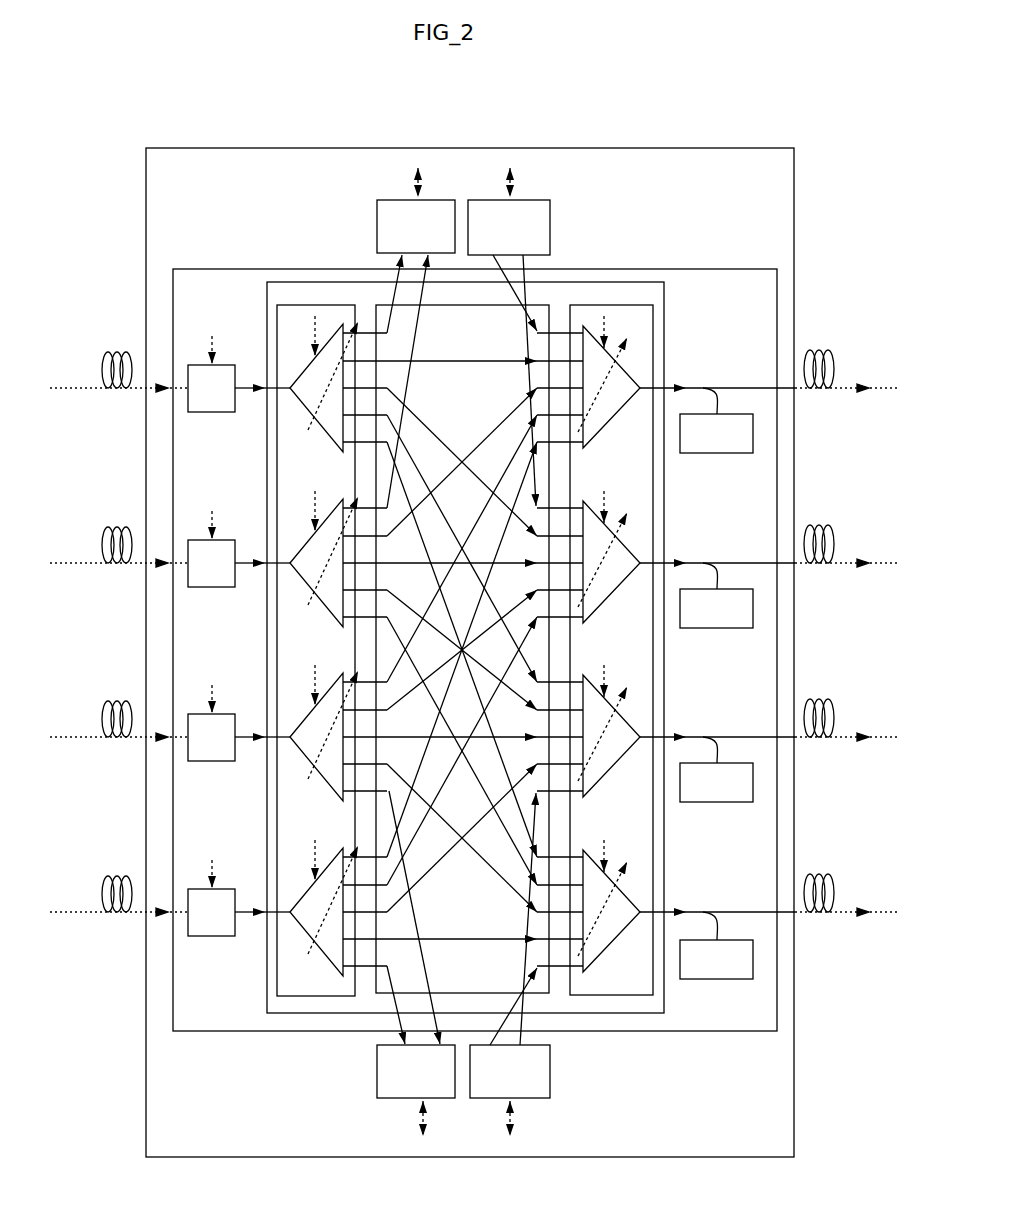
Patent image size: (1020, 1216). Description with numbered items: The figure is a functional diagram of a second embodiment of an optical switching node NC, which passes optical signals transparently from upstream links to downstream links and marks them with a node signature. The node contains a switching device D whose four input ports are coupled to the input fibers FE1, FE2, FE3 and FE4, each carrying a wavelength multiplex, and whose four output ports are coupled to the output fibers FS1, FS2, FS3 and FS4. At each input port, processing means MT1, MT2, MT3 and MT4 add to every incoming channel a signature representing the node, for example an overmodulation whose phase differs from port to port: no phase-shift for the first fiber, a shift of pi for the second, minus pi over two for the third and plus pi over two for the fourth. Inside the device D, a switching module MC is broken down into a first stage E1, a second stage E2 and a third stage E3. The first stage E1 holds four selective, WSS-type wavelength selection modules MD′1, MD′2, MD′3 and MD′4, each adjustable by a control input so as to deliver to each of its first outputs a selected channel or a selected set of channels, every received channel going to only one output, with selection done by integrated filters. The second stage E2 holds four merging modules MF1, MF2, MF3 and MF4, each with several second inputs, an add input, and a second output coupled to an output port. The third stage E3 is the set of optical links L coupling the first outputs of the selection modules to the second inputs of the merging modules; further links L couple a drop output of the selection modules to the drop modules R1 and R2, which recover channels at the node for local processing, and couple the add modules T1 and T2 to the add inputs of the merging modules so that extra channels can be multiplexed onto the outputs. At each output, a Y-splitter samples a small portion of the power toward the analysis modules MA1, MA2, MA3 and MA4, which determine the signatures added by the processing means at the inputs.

The switching node NC is at (281, 148).
The switching device D is at (745, 268).
The switching module MC is at (628, 282).
The optical links L is at (386, 331).
The first stage E1 is at (322, 997).
The second stage E2 is at (597, 996).
The third stage E3 is at (377, 994).
The drop module R1 is at (437, 199).
The add module T1 is at (532, 199).
The drop module R2 is at (443, 1099).
The add module T2 is at (533, 1100).
The first input fiber FE1 is at (82, 386).
The second input fiber FE2 is at (82, 561).
The third input fiber FE3 is at (82, 735).
The fourth input fiber FE4 is at (82, 910).
The processing means MT1 is at (203, 413).
The processing means MT2 is at (203, 588).
The processing means MT3 is at (203, 762).
The processing means MT4 is at (205, 937).
The wavelength selection module MD′1 is at (298, 372).
The wavelength selection module MD′2 is at (300, 576).
The wavelength selection module MD′3 is at (300, 750).
The wavelength selection module MD′4 is at (294, 930).
The merging module MF1 is at (612, 414).
The merging module MF2 is at (612, 589).
The merging module MF3 is at (612, 763).
The merging module MF4 is at (612, 938).
The analysis module MA1 is at (753, 433).
The analysis module MA2 is at (753, 608).
The analysis module MA3 is at (753, 782).
The analysis module MA4 is at (753, 959).
The output fiber FS1 is at (849, 385).
The output fiber FS2 is at (849, 560).
The output fiber FS3 is at (849, 734).
The output fiber FS4 is at (849, 909).